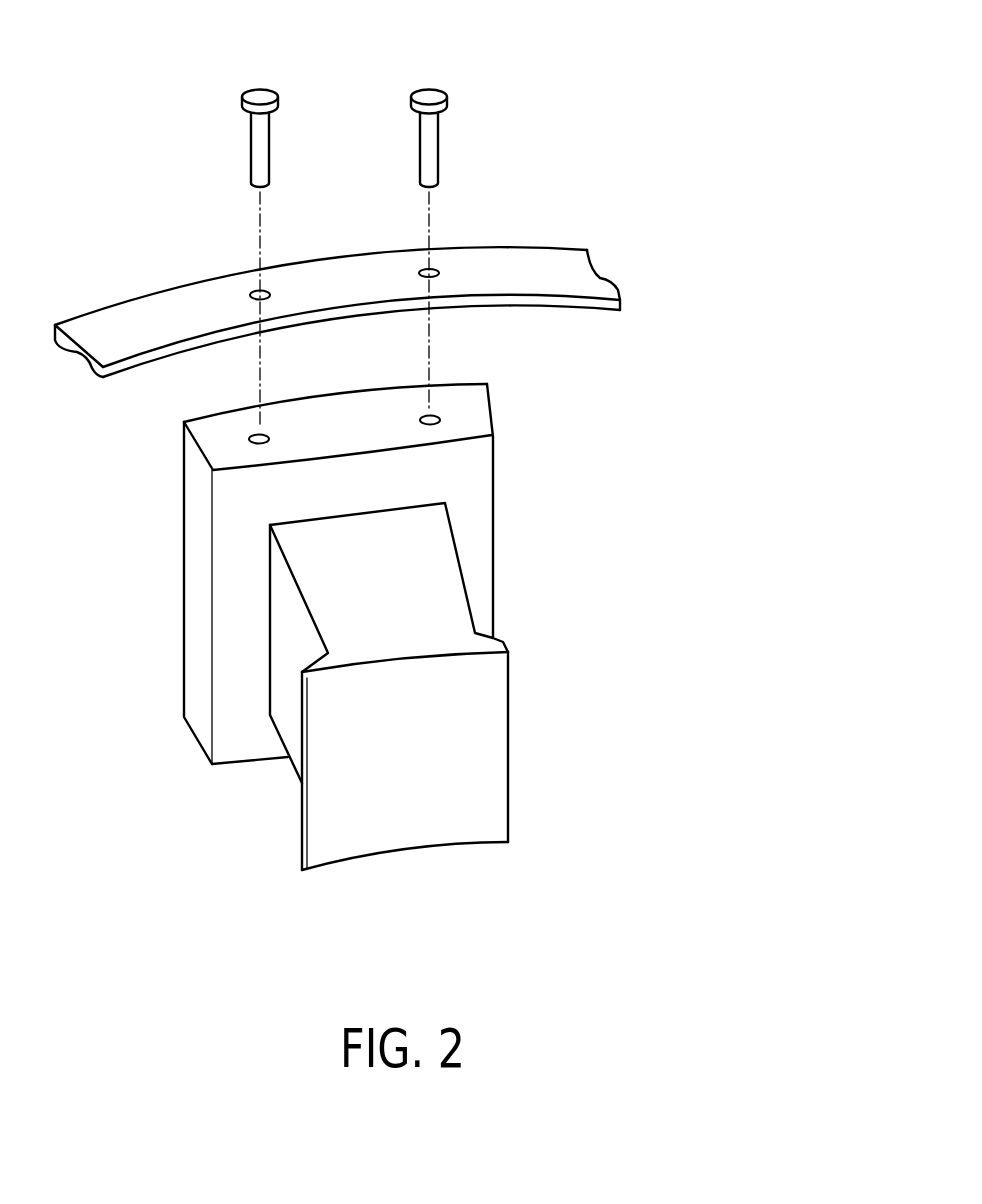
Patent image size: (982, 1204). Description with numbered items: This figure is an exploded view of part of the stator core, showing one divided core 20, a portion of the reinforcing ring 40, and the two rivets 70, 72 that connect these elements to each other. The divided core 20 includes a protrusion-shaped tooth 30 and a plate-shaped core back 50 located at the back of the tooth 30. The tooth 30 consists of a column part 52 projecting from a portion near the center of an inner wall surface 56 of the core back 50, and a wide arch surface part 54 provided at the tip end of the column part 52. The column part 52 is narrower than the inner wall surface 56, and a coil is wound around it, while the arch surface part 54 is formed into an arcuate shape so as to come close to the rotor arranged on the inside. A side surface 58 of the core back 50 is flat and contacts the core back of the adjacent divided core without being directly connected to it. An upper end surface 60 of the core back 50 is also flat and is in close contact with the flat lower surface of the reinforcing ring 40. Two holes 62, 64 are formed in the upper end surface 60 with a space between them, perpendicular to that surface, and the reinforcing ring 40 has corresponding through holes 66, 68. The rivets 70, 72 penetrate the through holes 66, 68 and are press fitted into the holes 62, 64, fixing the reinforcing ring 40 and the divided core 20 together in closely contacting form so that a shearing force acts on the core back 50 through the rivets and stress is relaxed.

The divided core 20 is at (508, 517).
The tooth 30 is at (471, 716).
The reinforcing ring 40 is at (353, 269).
The core back 50 is at (471, 542).
The column part 52 is at (377, 597).
The arch surface part 54 is at (372, 780).
The inner wall surface 56 is at (238, 598).
The side surface 58 is at (193, 540).
The upper end surface 60 is at (213, 445).
The hole 62 is at (258, 436).
The hole 64 is at (465, 372).
The through hole 66 is at (257, 292).
The through hole 68 is at (435, 268).
The rivet 70 is at (260, 88).
The rivet 72 is at (431, 88).